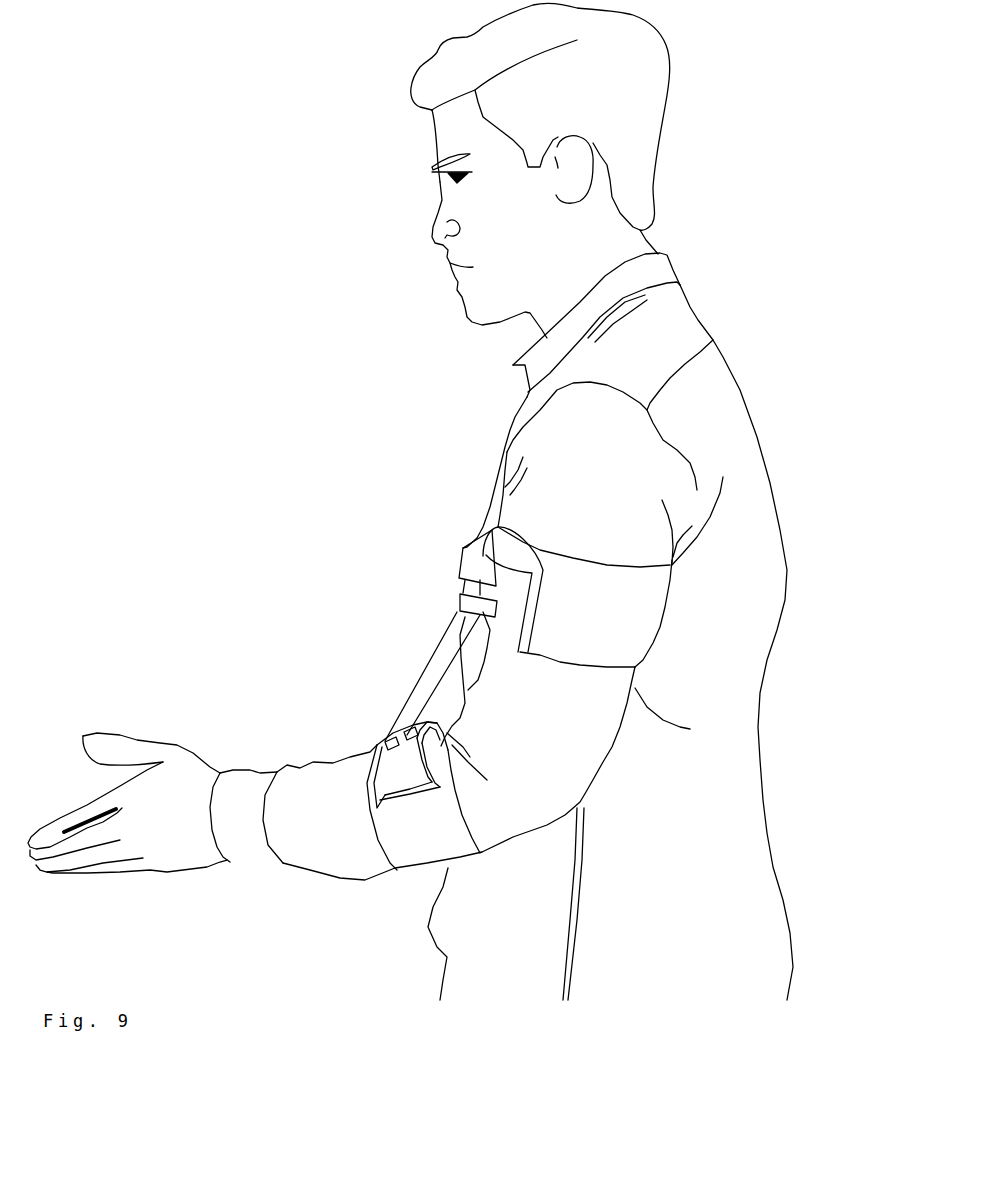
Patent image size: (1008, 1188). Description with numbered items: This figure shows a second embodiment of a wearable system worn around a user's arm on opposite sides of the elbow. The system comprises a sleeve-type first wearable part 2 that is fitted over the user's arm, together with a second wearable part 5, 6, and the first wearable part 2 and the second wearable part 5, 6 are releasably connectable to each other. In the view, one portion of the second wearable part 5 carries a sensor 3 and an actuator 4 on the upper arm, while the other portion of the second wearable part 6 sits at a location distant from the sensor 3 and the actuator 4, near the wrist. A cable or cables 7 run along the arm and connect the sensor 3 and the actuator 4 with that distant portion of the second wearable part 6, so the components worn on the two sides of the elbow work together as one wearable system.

The first wearable part 2 is at (667, 626).
The sensor 3 is at (459, 598).
The actuator 4 is at (461, 561).
The second wearable part 5 is at (502, 548).
The second wearable part 6 is at (376, 746).
The cable 7 is at (433, 683).